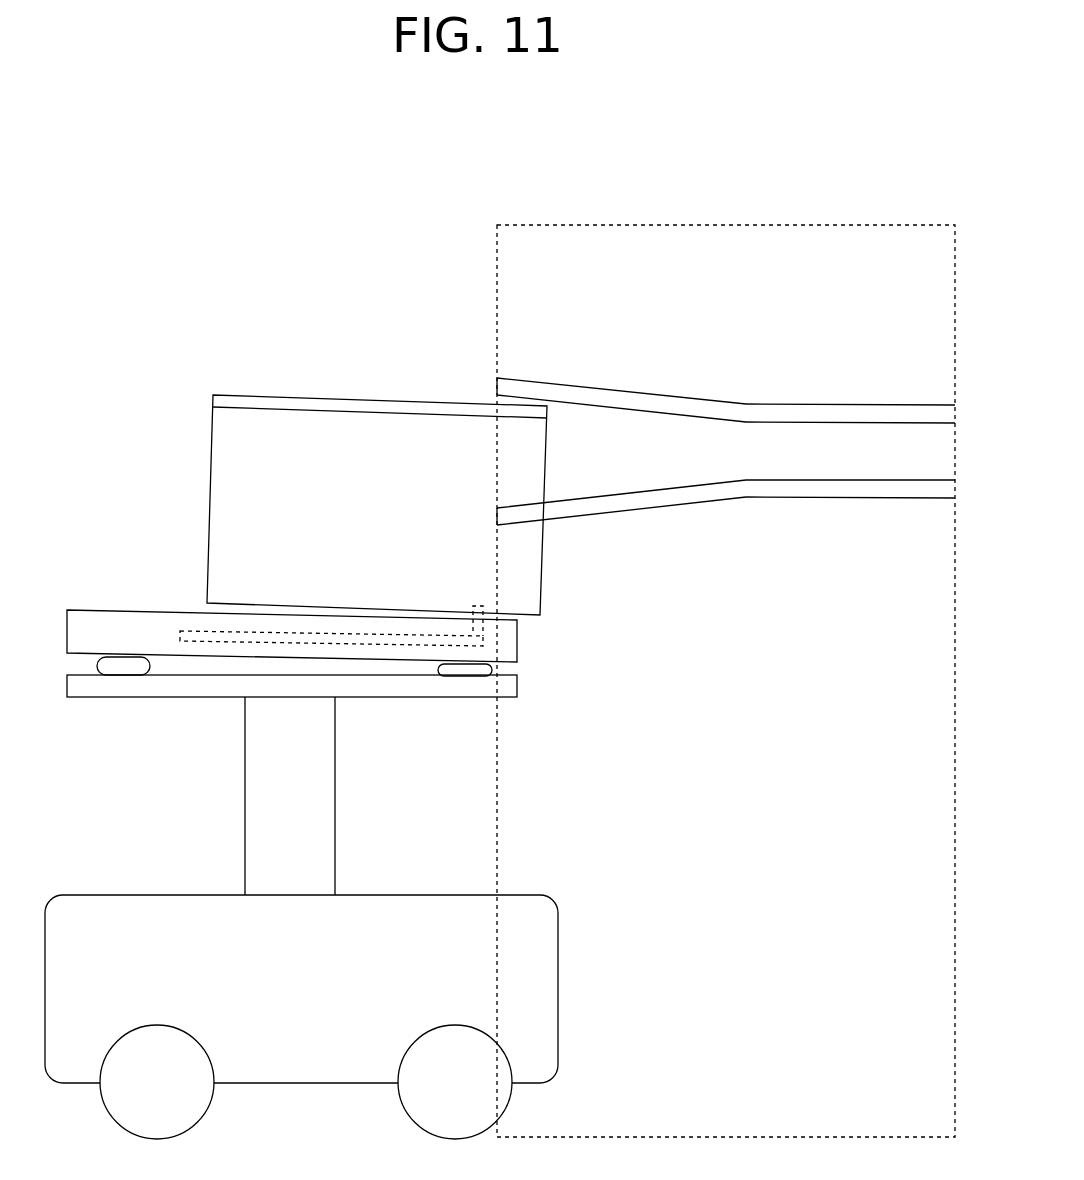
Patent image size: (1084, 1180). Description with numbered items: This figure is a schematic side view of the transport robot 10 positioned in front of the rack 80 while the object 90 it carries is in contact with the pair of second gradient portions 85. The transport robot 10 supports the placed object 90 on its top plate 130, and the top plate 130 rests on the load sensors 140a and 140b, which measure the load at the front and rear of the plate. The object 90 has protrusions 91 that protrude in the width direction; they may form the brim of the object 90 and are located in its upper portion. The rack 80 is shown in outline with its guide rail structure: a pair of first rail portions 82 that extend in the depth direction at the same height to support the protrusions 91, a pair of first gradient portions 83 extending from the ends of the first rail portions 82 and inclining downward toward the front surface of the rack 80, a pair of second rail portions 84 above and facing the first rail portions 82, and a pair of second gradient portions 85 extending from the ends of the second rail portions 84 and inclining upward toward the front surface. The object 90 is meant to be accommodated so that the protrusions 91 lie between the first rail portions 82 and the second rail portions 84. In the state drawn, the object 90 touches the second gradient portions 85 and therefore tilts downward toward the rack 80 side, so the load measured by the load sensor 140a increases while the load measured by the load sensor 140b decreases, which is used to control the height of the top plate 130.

The transport robot 10 is at (270, 330).
The rack 80 is at (758, 215).
The first rail portions 82 is at (860, 498).
The first gradient portions 83 is at (620, 512).
The second rail portions 84 is at (833, 405).
The second gradient portions 85 is at (585, 386).
The object 90 is at (210, 487).
The protrusions 91 is at (213, 396).
The top plate 130 is at (90, 610).
The load sensor 140a is at (473, 678).
The load sensor 140b is at (120, 678).